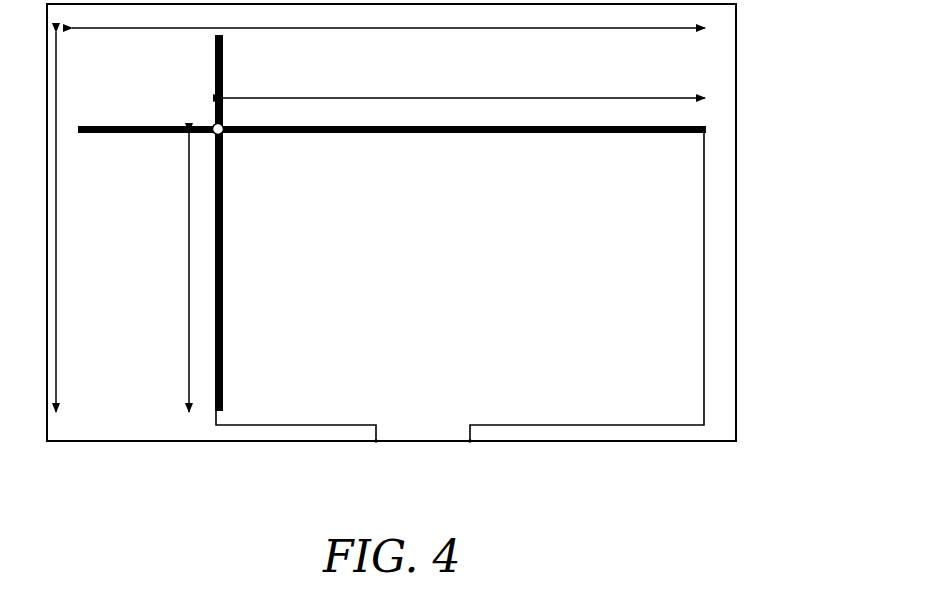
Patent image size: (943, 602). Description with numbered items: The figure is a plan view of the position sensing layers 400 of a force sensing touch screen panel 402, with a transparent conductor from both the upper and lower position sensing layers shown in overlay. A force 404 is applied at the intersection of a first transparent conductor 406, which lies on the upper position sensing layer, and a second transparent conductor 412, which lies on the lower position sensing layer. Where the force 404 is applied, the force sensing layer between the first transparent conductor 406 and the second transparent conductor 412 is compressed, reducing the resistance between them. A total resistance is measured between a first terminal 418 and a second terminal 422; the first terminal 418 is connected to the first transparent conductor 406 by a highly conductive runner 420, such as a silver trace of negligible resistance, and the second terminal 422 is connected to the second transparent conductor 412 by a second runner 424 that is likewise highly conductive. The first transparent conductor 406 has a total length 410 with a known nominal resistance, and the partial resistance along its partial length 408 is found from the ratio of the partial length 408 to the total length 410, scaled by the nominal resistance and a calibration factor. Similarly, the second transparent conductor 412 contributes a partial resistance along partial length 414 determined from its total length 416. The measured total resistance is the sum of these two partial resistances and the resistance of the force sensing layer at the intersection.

The position sensing layers 400 is at (592, 512).
The force sensing touch screen panel 402 is at (736, 61).
The force 404 is at (214, 126).
The first transparent conductor 406 is at (573, 134).
The partial length 408 is at (563, 97).
The total length 410 is at (475, 29).
The second transparent conductor 412 is at (224, 310).
The partial length 414 is at (188, 295).
The total length 416 is at (58, 221).
The first terminal 418 is at (470, 443).
The runner 420 is at (587, 425).
The second terminal 422 is at (376, 443).
The second runner 424 is at (297, 424).